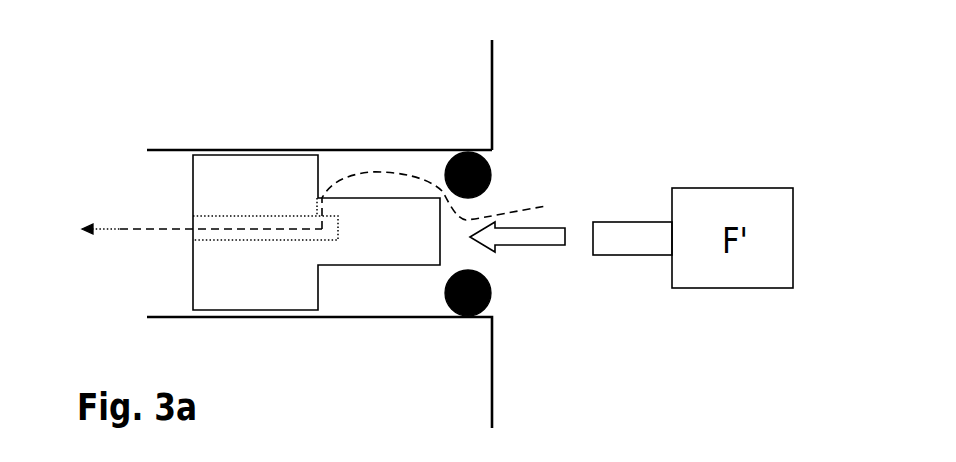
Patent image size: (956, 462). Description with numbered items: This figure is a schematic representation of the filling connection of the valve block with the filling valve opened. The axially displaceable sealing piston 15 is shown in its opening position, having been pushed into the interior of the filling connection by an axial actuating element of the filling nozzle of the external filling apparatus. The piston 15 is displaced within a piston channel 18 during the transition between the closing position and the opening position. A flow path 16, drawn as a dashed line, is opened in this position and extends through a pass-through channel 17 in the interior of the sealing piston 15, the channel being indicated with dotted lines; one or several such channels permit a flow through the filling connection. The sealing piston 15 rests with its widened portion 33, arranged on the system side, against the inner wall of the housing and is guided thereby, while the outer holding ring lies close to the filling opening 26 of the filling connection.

The sealing piston 15 is at (272, 300).
The flow path 16 is at (498, 218).
The pass-through channel 17 is at (197, 229).
The piston channel 18 is at (381, 298).
The filling opening 26 is at (482, 263).
The widened portion 33 is at (427, 148).